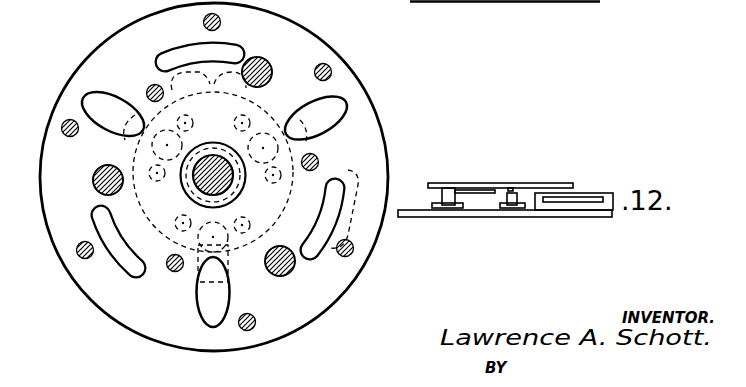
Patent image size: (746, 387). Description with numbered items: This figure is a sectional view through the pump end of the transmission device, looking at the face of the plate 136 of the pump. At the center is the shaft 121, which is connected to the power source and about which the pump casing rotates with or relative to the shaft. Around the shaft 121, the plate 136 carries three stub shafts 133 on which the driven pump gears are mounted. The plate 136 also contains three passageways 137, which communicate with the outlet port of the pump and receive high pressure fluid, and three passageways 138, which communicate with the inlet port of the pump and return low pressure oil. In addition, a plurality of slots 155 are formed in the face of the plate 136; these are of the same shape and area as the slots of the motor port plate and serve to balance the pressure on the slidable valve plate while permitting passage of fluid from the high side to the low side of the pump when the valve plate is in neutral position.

The shaft 121 is at (205, 182).
The stub shafts 133 is at (272, 67).
The plate 136 is at (104, 36).
The passageways 137 is at (118, 78).
The passageways 138 is at (178, 54).
The slots 155 is at (174, 102).